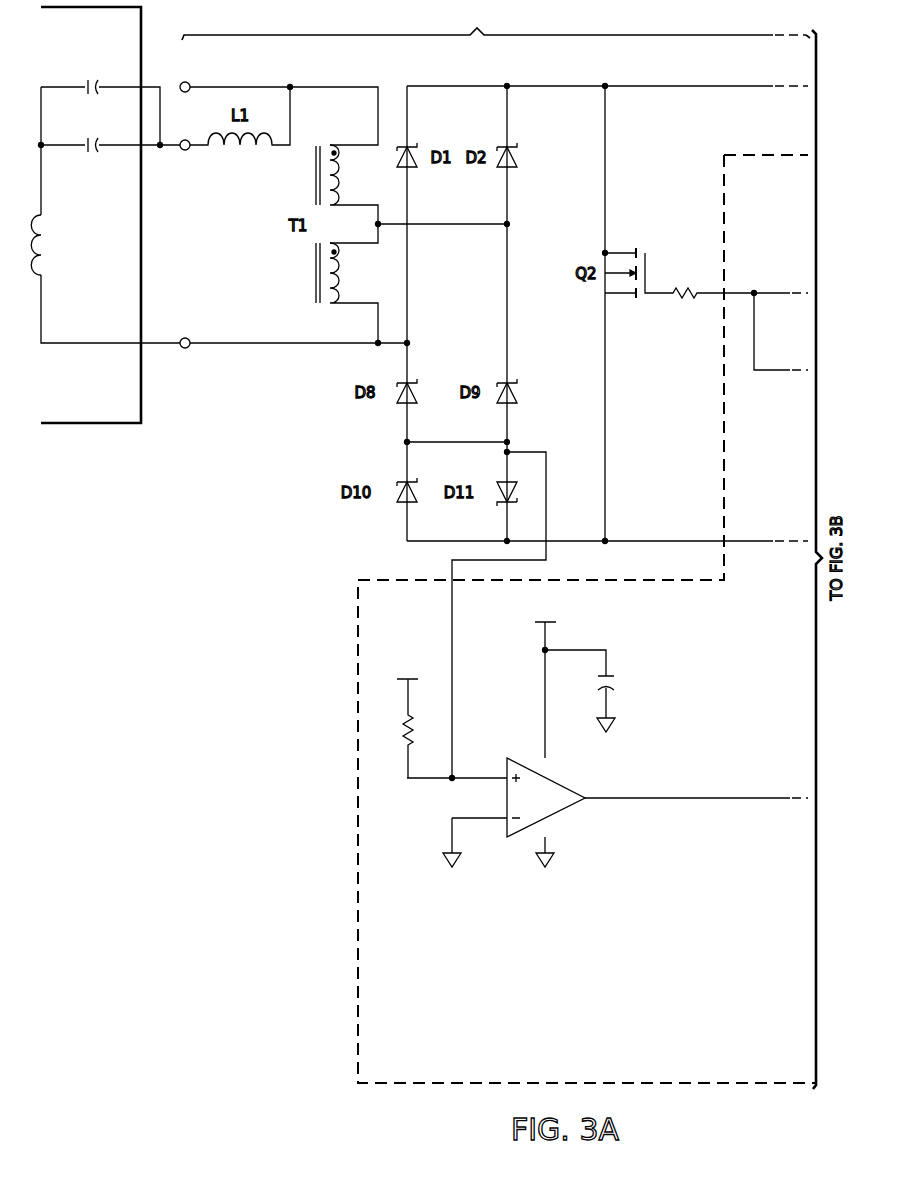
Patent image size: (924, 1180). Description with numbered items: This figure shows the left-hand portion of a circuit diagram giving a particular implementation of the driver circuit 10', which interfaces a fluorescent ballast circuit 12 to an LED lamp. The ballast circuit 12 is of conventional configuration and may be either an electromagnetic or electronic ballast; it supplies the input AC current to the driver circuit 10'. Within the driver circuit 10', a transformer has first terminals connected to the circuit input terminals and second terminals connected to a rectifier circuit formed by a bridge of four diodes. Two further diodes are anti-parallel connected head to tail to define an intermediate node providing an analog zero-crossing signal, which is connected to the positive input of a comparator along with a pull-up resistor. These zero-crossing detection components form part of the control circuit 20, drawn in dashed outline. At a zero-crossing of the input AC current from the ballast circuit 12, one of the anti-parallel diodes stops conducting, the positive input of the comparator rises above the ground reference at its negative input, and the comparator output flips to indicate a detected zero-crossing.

The fluorescent ballast circuit 12 is at (105, 215).
The control circuit 20 is at (752, 150).
The driver circuit 10' is at (496, 21).